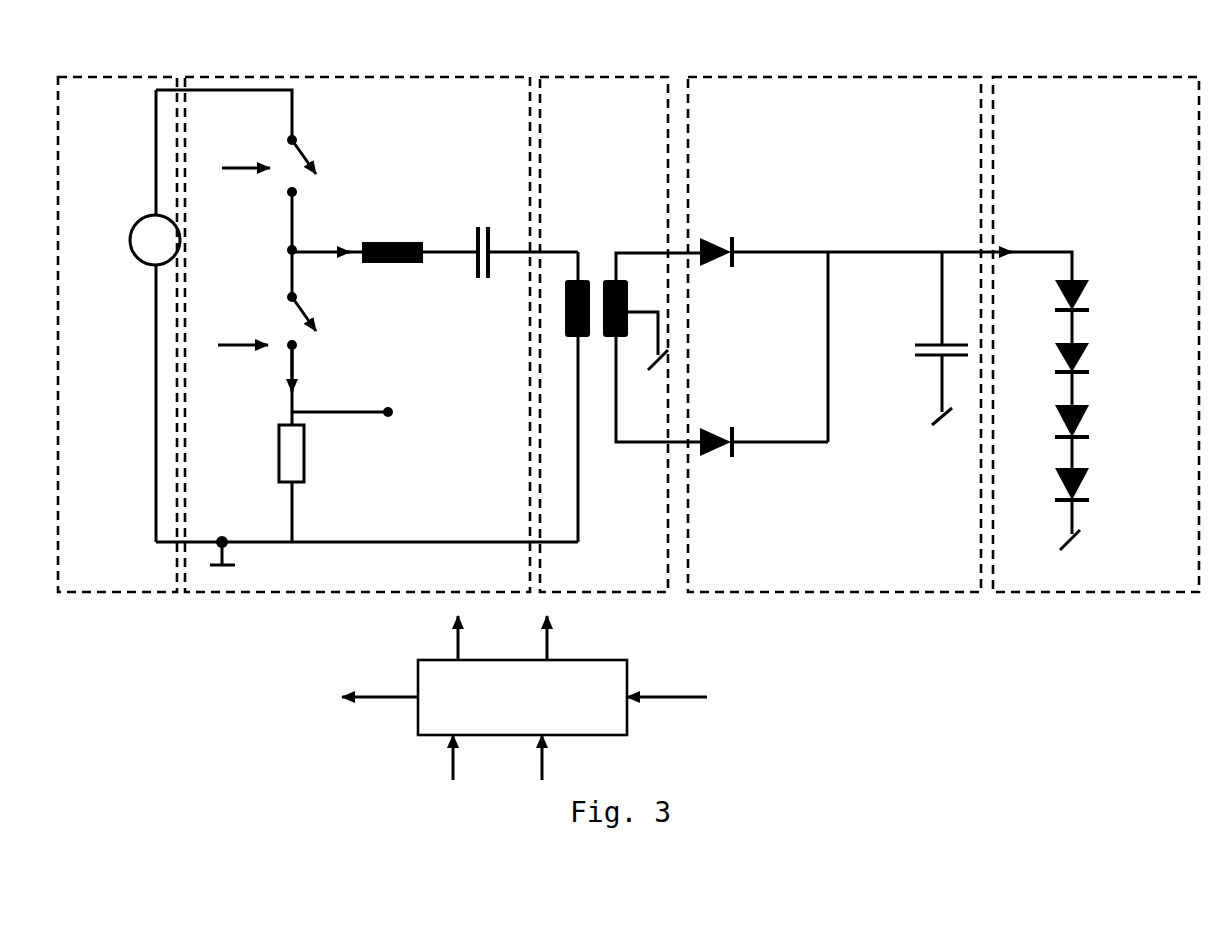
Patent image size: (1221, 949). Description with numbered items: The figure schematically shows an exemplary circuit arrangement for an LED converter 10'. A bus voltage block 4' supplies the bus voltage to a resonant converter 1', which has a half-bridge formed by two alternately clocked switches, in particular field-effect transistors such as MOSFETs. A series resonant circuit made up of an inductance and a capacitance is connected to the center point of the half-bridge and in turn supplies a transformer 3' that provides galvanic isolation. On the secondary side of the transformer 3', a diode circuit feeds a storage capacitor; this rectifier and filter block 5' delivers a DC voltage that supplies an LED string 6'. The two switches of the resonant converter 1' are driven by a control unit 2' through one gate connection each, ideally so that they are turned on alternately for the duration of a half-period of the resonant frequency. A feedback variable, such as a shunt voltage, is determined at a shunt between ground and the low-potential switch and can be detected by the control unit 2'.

The LED converter 10' is at (628, 373).
The bus voltage block 4' is at (119, 303).
The resonant converter 1' is at (367, 303).
The transformer 3' is at (620, 303).
The rectifier and filter block 5' is at (840, 303).
The LED string 6' is at (1096, 303).
The control unit 2' is at (520, 698).